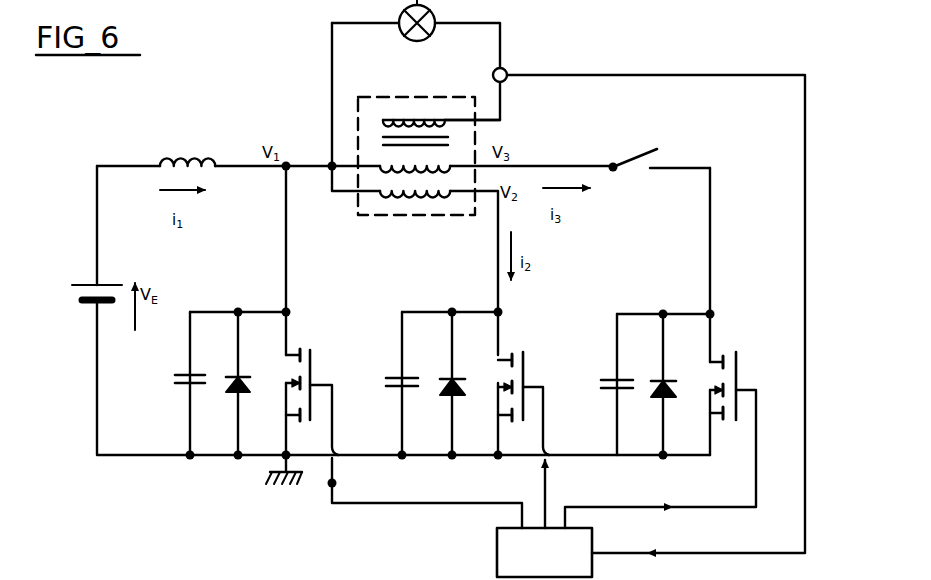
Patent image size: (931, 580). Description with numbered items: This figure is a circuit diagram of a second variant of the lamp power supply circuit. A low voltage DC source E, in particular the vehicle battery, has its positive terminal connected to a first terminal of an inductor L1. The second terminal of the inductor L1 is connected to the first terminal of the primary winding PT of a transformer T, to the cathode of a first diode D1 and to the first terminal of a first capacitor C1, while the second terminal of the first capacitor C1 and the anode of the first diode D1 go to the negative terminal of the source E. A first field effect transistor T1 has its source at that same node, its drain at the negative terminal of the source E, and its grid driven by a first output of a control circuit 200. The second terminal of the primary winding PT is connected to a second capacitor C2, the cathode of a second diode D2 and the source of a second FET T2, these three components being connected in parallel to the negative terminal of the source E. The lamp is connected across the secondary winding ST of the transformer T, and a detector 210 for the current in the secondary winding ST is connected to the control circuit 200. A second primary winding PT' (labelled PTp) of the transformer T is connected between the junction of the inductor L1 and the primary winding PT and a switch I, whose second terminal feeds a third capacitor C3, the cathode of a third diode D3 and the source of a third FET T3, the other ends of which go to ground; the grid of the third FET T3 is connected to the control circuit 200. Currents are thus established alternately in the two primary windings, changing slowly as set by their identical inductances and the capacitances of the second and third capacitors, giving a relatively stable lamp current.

The detector 210 is at (505, 70).
The control circuit 200 is at (544, 552).
The inductor L1 is at (187, 149).
The low voltage DC source E is at (78, 292).
The secondary winding ST is at (392, 118).
The transformer T is at (357, 148).
The primary winding PT is at (418, 200).
The second primary winding PTp is at (376, 178).
The switch I is at (630, 157).
The first capacitor C1 is at (171, 368).
The first diode D1 is at (225, 373).
The first field effect transistor T1 is at (403, 429).
The second capacitor C2 is at (390, 366).
The second diode D2 is at (439, 370).
The second field effect transistor T2 is at (522, 429).
The third capacitor C3 is at (596, 368).
The third diode D3 is at (651, 373).
The third field effect transistor T3 is at (660, 429).